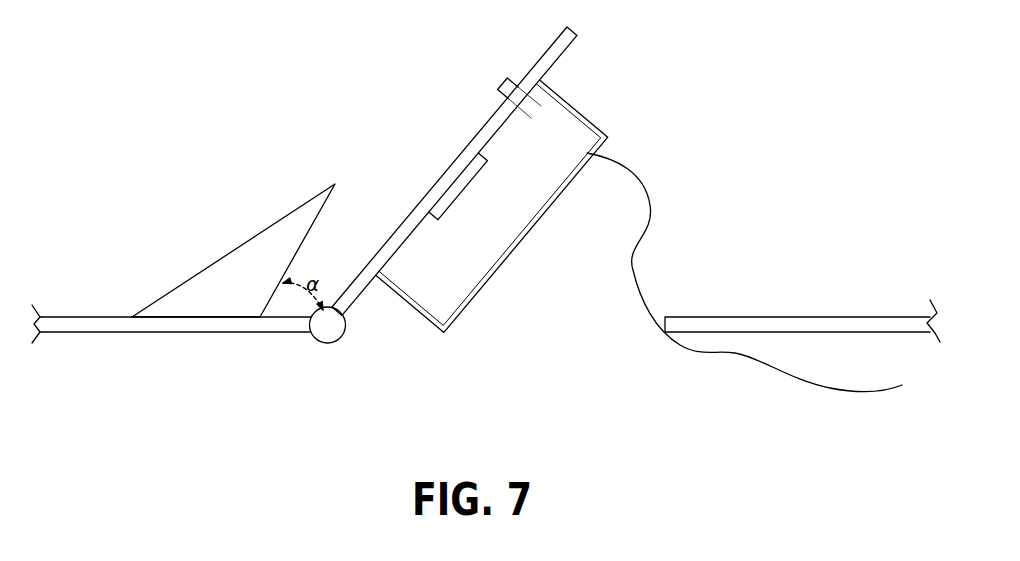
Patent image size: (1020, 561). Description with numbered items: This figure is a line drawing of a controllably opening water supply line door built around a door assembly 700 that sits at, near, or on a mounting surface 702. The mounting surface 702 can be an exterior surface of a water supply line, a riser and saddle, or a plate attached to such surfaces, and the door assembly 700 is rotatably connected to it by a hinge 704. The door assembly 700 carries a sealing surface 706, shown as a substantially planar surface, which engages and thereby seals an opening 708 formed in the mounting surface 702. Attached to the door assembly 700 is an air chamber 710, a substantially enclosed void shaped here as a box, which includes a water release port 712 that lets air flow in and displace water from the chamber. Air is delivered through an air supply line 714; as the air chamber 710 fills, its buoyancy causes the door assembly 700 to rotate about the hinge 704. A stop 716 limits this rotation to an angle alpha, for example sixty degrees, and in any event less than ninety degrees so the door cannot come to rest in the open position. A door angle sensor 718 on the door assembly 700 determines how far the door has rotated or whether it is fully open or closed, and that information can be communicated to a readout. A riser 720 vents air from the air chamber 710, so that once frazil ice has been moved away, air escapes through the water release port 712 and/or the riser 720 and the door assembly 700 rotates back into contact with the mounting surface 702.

The door assembly 700 is at (766, 87).
The mounting surface 702 is at (100, 310).
The hinge 704 is at (327, 331).
The sealing surface 706 is at (573, 35).
The opening 708 is at (548, 360).
The air chamber 710 is at (541, 103).
The water release port 712 is at (428, 293).
The air supply line 714 is at (827, 387).
The stop 716 is at (268, 239).
The door angle sensor 718 is at (482, 157).
The riser 720 is at (502, 92).